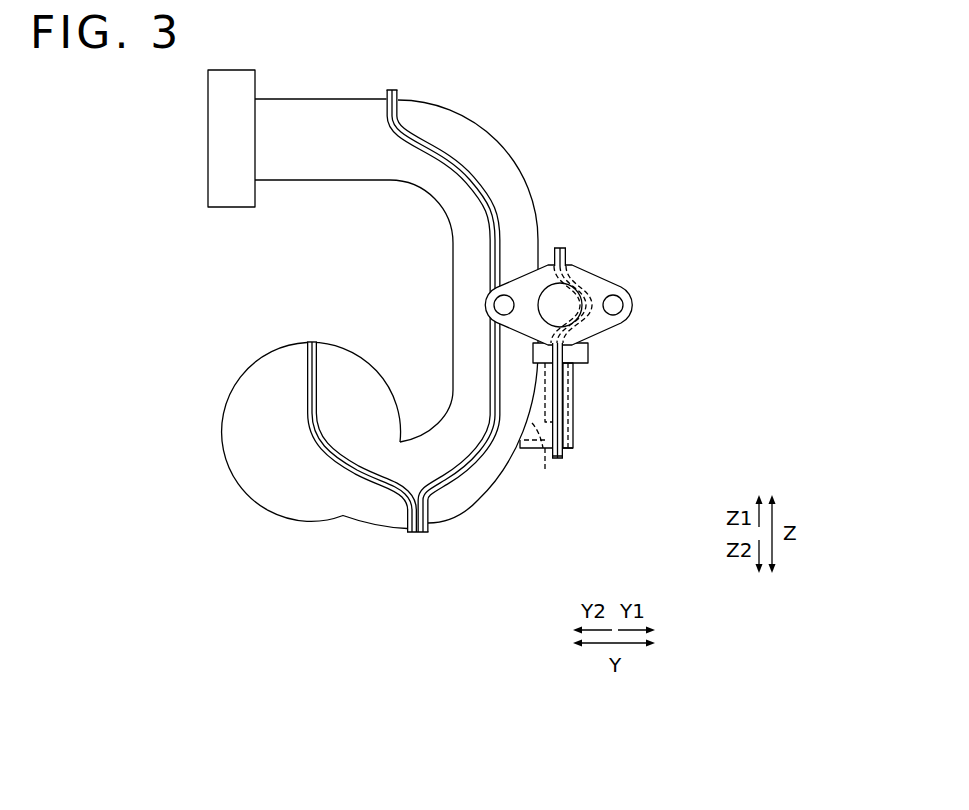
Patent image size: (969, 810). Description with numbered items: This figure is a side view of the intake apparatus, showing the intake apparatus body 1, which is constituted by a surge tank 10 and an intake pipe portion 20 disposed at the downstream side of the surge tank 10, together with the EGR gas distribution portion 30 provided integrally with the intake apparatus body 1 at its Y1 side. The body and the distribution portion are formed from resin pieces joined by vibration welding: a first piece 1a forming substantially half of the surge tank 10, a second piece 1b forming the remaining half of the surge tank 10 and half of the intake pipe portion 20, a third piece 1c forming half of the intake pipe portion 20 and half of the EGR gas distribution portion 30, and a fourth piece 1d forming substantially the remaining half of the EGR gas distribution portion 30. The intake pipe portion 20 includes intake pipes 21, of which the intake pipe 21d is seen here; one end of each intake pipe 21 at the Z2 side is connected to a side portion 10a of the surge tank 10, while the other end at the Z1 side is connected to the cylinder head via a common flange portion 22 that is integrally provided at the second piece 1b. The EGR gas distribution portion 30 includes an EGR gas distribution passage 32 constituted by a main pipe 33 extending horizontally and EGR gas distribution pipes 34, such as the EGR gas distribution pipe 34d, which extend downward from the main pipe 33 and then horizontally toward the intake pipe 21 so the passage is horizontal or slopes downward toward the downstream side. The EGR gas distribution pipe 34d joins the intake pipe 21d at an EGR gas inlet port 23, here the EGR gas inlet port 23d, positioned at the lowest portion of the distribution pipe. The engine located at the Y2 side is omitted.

The intake apparatus body 1 is at (538, 103).
The first piece 1a is at (243, 454).
The second piece 1b is at (323, 115).
The third piece 1c is at (432, 115).
The fourth piece 1d is at (575, 421).
The surge tank 10 is at (297, 437).
The side portion 10a is at (401, 440).
The intake pipe portion 20 is at (503, 336).
The intake pipe 21 is at (468, 336).
The intake pipe 21d is at (486, 468).
The flange portion 22 is at (242, 92).
The EGR gas inlet port 23 is at (553, 467).
The EGR gas inlet port 23d is at (544, 450).
The EGR gas distribution portion 30 is at (613, 380).
The EGR gas distribution passage 32 is at (594, 463).
The main pipe 33 is at (582, 350).
The EGR gas distribution pipe 34 is at (628, 405).
The EGR gas distribution pipe 34d is at (571, 396).